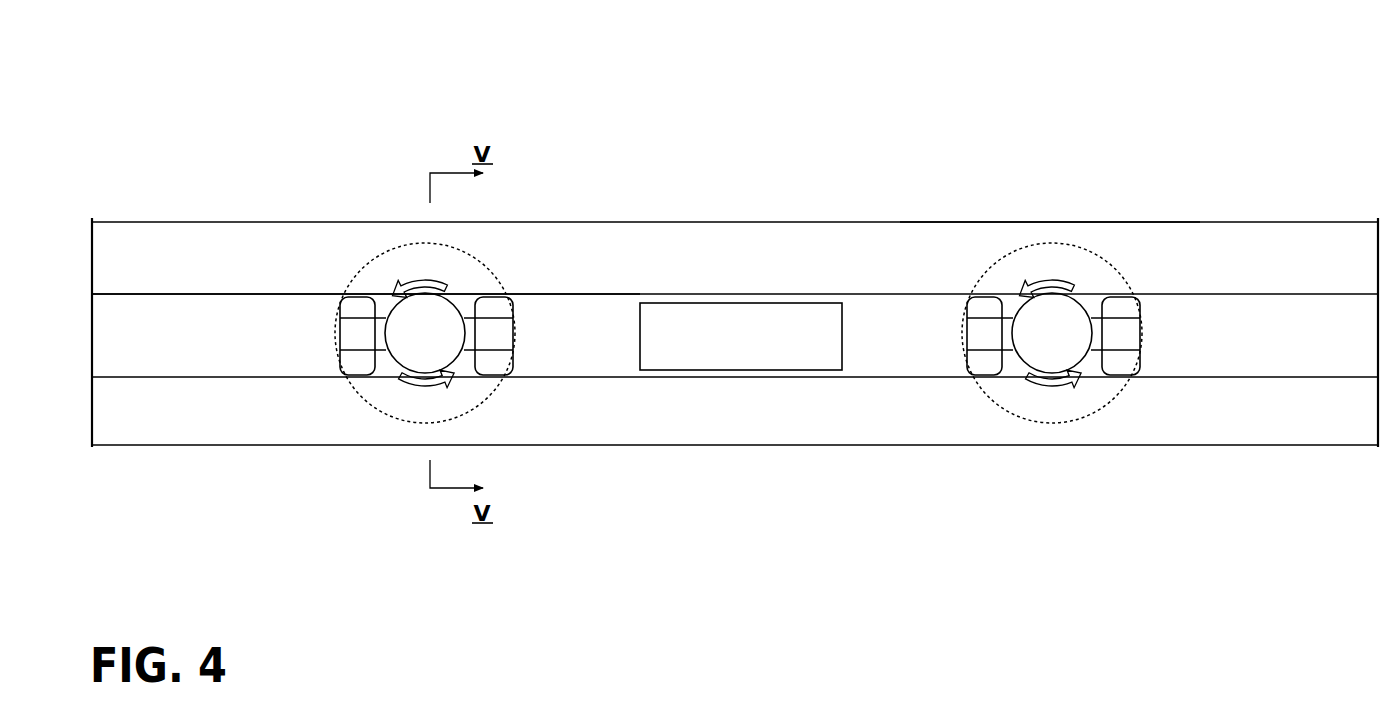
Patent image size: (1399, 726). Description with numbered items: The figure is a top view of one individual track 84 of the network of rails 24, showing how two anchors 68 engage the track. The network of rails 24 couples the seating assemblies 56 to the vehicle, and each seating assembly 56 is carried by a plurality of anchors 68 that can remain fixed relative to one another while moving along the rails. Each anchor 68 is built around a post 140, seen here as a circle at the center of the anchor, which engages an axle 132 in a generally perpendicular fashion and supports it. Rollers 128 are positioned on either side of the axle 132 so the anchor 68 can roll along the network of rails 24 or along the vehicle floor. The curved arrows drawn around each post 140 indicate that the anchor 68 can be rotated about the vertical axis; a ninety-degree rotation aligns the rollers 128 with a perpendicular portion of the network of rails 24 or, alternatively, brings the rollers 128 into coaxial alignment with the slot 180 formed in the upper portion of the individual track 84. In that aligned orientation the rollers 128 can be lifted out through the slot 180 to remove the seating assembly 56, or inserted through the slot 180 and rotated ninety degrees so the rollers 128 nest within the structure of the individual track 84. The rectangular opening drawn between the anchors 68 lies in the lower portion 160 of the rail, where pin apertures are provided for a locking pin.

The network of rails 24 is at (1280, 162).
The seating assembly 56 is at (742, 372).
The anchor 68 is at (459, 299).
The individual track 84 is at (1022, 222).
The roller 128 is at (358, 362).
The axle 132 is at (345, 333).
The post 140 is at (410, 323).
The lower portion 160 is at (590, 340).
The slot 180 is at (887, 293).